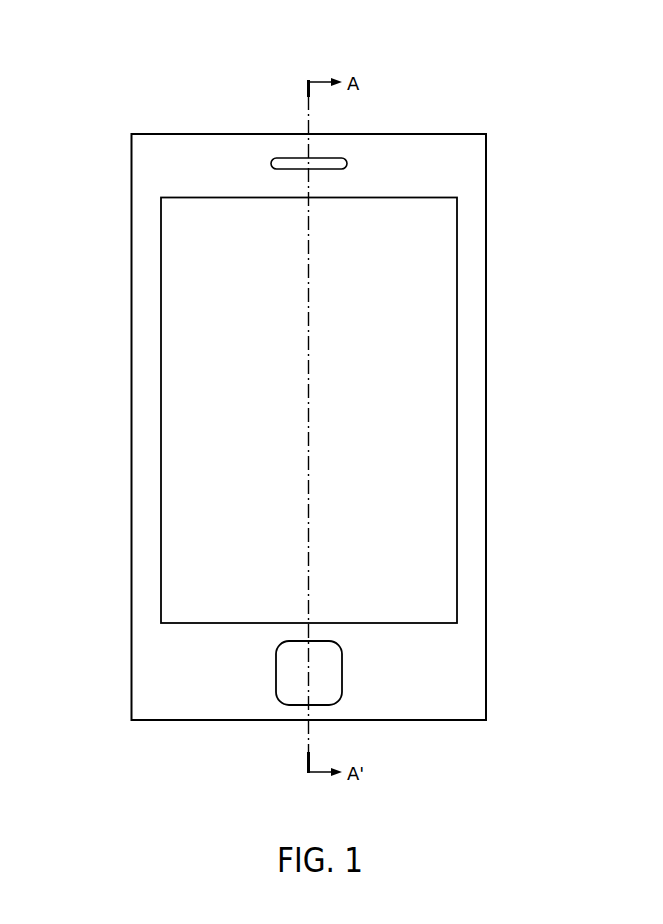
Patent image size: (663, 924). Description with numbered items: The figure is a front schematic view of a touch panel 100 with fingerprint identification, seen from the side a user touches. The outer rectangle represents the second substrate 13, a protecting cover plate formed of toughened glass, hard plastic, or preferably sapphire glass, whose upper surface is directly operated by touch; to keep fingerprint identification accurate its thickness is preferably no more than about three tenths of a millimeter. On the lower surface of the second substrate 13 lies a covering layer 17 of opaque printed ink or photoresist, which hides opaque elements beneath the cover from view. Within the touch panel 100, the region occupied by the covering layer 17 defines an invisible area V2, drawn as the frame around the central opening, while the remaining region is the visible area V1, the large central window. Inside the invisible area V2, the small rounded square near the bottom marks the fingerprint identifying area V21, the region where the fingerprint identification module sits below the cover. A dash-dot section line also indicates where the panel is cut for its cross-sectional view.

The touch panel with fingerprint identification 100 is at (160, 57).
The second substrate 13 is at (486, 227).
The covering layer 17 is at (478, 309).
The visible area V1 is at (440, 418).
The invisible area V2 is at (475, 492).
The fingerprint identifying area V21 is at (328, 690).